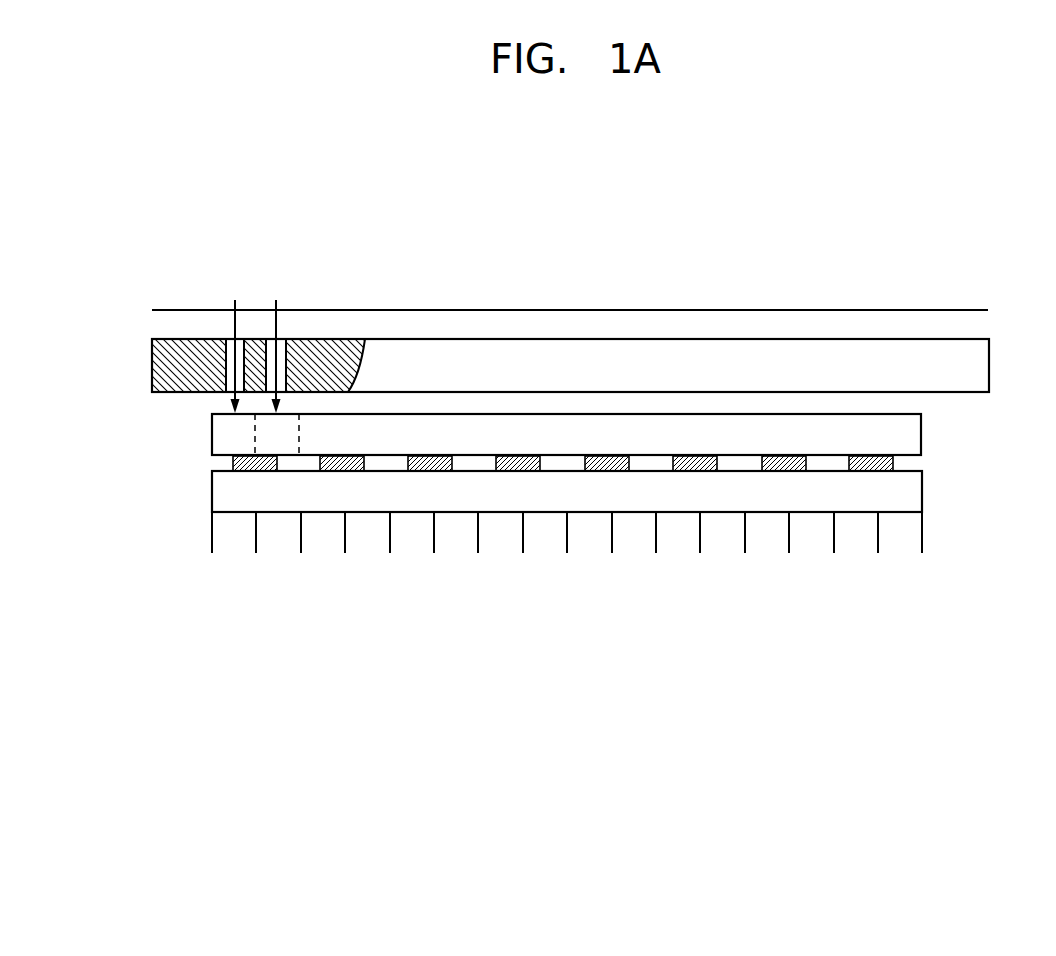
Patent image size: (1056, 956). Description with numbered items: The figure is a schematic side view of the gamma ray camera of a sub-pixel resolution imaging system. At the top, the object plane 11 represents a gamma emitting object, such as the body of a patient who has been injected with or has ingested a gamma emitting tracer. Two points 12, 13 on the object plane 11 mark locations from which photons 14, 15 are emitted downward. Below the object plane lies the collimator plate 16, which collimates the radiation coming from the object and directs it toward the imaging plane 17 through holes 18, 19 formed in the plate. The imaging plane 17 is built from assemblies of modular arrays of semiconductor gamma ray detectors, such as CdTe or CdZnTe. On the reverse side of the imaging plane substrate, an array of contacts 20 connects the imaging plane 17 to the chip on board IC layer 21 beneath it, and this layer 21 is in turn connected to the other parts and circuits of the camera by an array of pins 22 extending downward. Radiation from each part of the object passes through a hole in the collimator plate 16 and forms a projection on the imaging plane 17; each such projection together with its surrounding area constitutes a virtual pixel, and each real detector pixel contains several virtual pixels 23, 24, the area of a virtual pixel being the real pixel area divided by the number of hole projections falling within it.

The object plane 11 is at (880, 310).
The point 12 is at (235, 302).
The point 13 is at (276, 305).
The photon 14 is at (235, 328).
The photon 15 is at (277, 323).
The collimator plate 16 is at (982, 360).
The imaging plane 17 is at (913, 428).
The hole 18 is at (288, 357).
The hole 19 is at (225, 365).
The array of contacts 20 is at (250, 476).
The chip on board IC layer 21 is at (302, 488).
The array of pins 22 is at (343, 545).
The virtual pixel 23 is at (243, 450).
The virtual pixel 24 is at (283, 438).